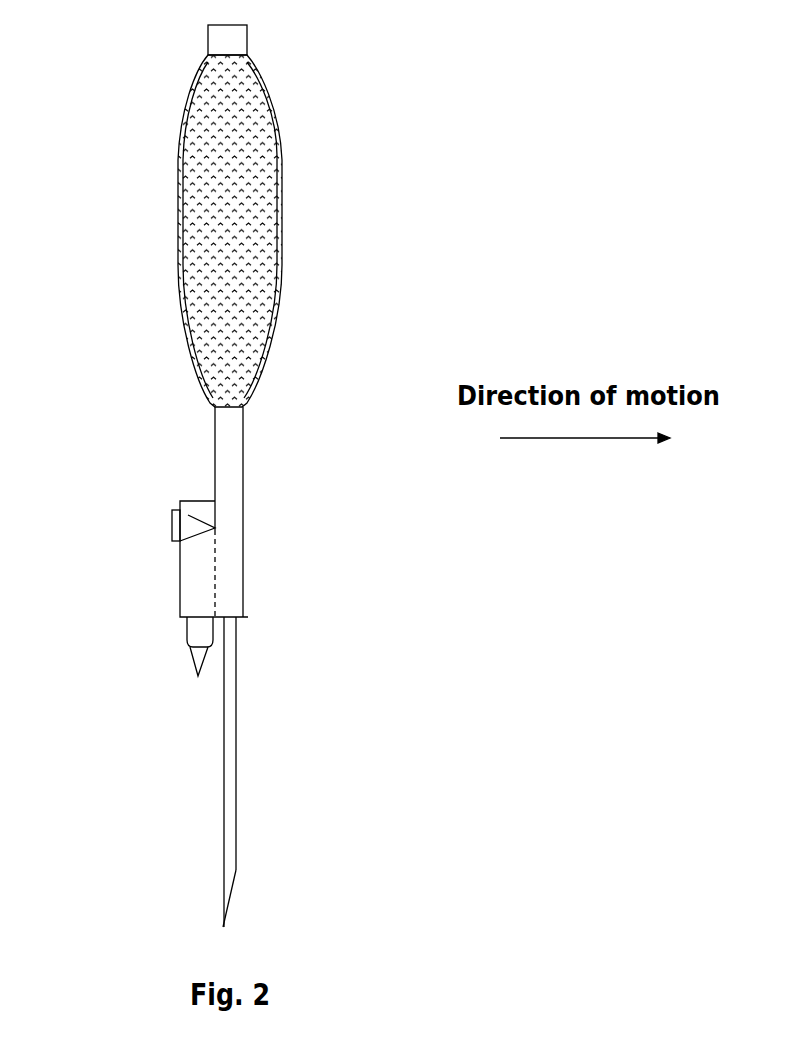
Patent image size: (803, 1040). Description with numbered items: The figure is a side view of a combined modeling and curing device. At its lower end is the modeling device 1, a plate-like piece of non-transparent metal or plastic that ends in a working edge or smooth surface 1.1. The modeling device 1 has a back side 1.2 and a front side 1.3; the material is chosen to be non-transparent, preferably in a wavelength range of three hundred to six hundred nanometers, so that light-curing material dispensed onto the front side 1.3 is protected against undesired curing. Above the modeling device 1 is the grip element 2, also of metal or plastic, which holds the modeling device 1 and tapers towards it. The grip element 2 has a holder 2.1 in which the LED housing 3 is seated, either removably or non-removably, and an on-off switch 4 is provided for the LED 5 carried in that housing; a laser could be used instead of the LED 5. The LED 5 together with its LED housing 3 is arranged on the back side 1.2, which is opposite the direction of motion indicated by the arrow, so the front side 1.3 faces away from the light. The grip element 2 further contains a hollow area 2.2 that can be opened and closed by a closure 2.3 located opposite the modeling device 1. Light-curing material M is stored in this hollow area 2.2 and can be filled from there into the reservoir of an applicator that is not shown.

The modeling device 1 is at (230, 775).
The working edge or smooth surface 1.1 is at (223, 927).
The back side 1.2 is at (223, 823).
The front side 1.3 is at (237, 815).
The grip element 2 is at (237, 231).
The holder 2.1 is at (193, 562).
The hollow area 2.2 is at (282, 173).
The closure 2.3 is at (240, 42).
The LED housing 3 is at (197, 515).
The on-off switch 4 is at (215, 527).
The LED 5 is at (197, 660).
The light-curing material M is at (217, 214).